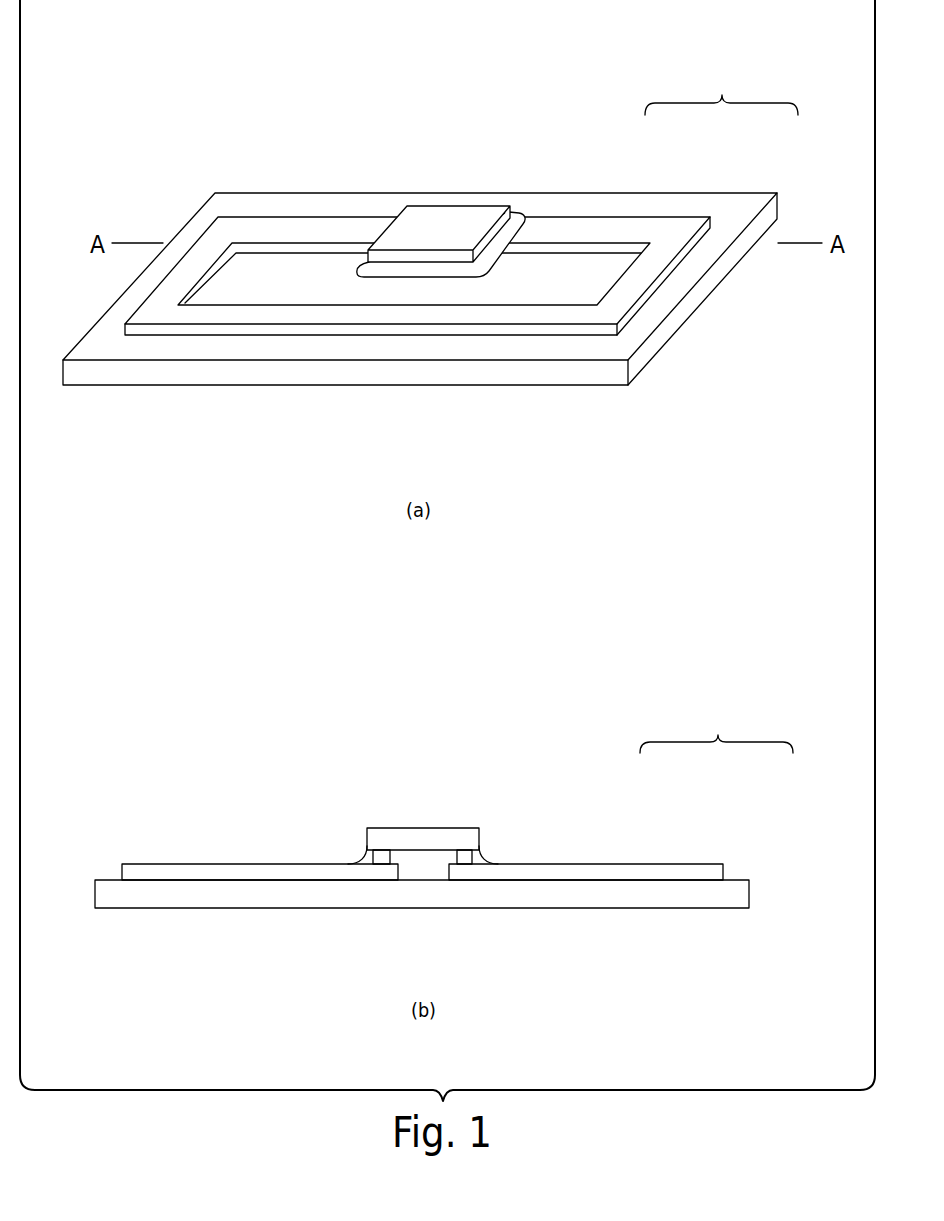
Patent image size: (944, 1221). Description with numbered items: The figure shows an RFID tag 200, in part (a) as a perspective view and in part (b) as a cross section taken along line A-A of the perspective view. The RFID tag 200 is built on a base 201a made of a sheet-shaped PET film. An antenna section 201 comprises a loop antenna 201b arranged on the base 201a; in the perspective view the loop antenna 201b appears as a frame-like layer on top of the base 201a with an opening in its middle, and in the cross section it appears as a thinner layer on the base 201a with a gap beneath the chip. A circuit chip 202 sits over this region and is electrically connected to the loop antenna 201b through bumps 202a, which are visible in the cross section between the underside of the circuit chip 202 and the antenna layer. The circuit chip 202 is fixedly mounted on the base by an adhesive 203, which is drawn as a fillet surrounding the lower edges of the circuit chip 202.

The RFID tag 200 is at (580, 113).
The antenna section 201 is at (719, 407).
The base 201a is at (738, 208).
The loop antenna 201b is at (615, 232).
The circuit chip 202 is at (445, 228).
The bumps 202a is at (383, 858).
The adhesive 203 is at (408, 268).